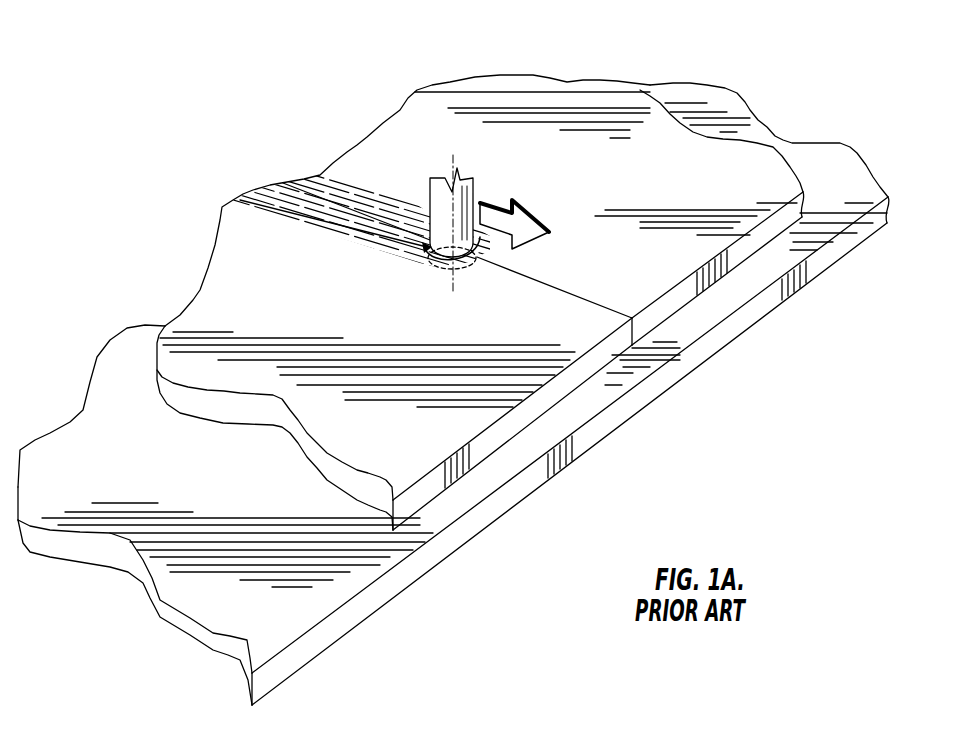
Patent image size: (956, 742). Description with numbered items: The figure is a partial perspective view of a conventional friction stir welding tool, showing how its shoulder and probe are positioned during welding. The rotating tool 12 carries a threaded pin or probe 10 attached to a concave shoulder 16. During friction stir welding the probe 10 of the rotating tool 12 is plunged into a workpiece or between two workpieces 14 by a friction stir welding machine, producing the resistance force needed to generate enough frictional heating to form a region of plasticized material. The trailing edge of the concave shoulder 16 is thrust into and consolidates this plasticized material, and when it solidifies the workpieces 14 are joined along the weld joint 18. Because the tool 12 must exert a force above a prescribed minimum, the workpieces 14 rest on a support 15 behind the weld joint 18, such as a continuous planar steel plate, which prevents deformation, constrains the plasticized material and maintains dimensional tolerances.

The probe 10 is at (473, 262).
The rotating tool 12 is at (481, 192).
The workpieces 14 is at (575, 335).
The support 15 is at (265, 622).
The concave shoulder 16 is at (444, 259).
The weld joint 18 is at (354, 216).